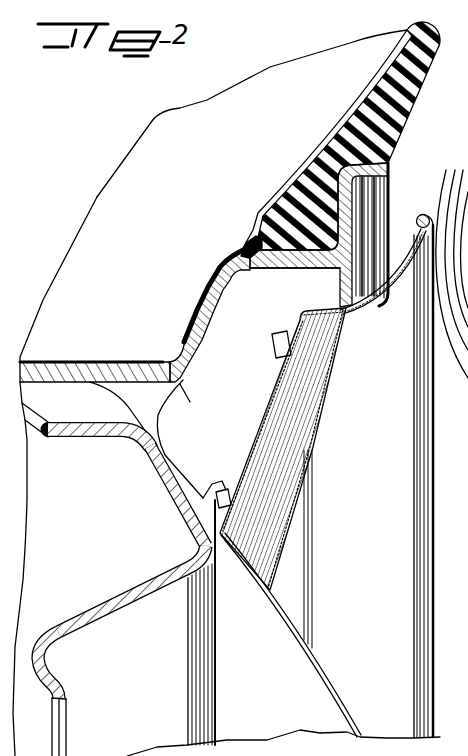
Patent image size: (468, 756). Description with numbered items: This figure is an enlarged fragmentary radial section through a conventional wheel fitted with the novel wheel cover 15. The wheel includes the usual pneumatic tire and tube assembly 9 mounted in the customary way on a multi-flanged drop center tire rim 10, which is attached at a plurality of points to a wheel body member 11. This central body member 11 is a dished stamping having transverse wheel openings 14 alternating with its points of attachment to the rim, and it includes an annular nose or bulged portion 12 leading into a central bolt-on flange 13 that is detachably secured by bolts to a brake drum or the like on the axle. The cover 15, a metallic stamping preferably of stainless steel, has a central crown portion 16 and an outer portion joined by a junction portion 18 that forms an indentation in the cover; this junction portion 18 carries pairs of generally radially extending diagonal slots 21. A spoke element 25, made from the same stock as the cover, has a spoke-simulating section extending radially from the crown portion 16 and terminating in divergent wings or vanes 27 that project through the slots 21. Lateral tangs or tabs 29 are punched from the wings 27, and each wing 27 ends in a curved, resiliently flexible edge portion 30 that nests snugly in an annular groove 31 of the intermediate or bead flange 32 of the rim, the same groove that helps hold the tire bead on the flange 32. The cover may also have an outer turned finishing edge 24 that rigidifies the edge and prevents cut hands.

The pneumatic tire and tube assembly 9 is at (394, 116).
The multi-flanged drop center tire rim 10 is at (349, 212).
The wheel body member 11 is at (143, 458).
The annular nose or bulged portion 12 is at (199, 553).
The central bolt-on flange 13 is at (70, 703).
The transverse wheel openings 14 is at (62, 404).
The wheel cover 15 is at (372, 666).
The central crown portion 16 is at (310, 637).
The junction portion 18 is at (252, 445).
The diagonal slots 21 is at (265, 405).
The outer turned finishing edge 24 is at (425, 214).
The spoke element 25 is at (304, 505).
The wings or vanes 27 is at (178, 358).
The lateral tangs or tabs 29 is at (286, 356).
The resiliently flexible edge portion 30 is at (250, 285).
The annular groove 31 is at (235, 280).
The intermediate or bead flange 32 is at (307, 262).